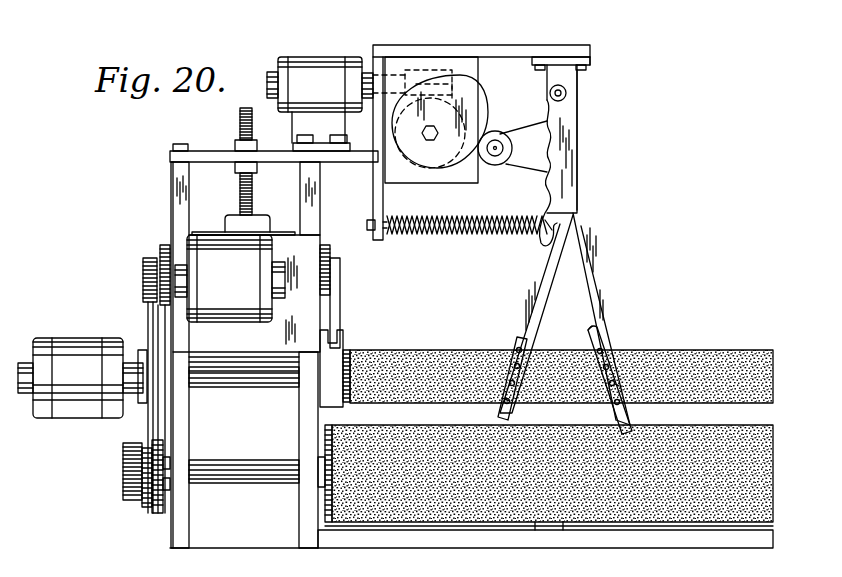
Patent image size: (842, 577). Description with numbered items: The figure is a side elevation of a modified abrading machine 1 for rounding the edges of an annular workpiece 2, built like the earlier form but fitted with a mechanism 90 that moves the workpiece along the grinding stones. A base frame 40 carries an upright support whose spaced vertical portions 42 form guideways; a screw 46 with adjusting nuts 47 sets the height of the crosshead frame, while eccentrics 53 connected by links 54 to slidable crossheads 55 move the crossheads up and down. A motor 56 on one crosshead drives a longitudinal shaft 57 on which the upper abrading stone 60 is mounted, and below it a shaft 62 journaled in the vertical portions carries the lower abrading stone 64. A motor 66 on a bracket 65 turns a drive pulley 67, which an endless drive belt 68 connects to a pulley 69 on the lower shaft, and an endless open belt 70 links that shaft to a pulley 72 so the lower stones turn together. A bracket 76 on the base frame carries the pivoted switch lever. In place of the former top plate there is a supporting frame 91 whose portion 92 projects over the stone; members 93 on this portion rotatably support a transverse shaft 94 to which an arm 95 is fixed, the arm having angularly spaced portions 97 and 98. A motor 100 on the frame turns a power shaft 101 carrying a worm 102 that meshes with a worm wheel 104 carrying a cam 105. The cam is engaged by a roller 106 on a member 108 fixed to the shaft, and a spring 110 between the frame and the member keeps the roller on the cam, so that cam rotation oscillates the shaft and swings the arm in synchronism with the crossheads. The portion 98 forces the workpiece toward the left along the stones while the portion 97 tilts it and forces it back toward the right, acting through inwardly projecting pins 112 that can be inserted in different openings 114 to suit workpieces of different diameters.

The abrading machine 1 is at (162, 163).
The workpiece 2 is at (591, 333).
The base frame 40 is at (470, 539).
The vertical portions 42 is at (171, 186).
The screw 46 is at (241, 112).
The adjusting nuts 47 is at (250, 163).
The eccentrics 53 is at (160, 247).
The links 54 is at (158, 310).
The crossheads 55 is at (298, 390).
The motor 56 is at (79, 337).
The longitudinal shaft 57 is at (265, 377).
The abrading stone 60 is at (712, 352).
The longitudinal shaft 62 is at (237, 483).
The abrading stone 64 is at (688, 521).
The bracket 65 is at (305, 257).
The motor 66 is at (195, 245).
The drive pulley 67 is at (143, 276).
The endless drive belt 68 is at (148, 318).
The pulley 69 is at (148, 498).
The endless open belt 70 is at (134, 491).
The pulley 72 is at (123, 470).
The bracket 76 is at (545, 531).
The mechanism 90 is at (587, 141).
The supporting frame 91 is at (207, 151).
The frame portion 92 is at (487, 45).
The members 93 is at (560, 66).
The shaft 94 is at (572, 97).
The arm 95 is at (570, 179).
The arm portion 97 is at (530, 298).
The arm portion 98 is at (583, 268).
The motor 100 is at (283, 58).
The power shaft 101 is at (397, 80).
The worm 102 is at (427, 72).
The worm wheel 104 is at (458, 112).
The cam 105 is at (486, 84).
The roller 106 is at (497, 164).
The member 108 is at (548, 152).
The spring 110 is at (435, 231).
The pins 112 is at (503, 400).
The openings 114 is at (516, 365).